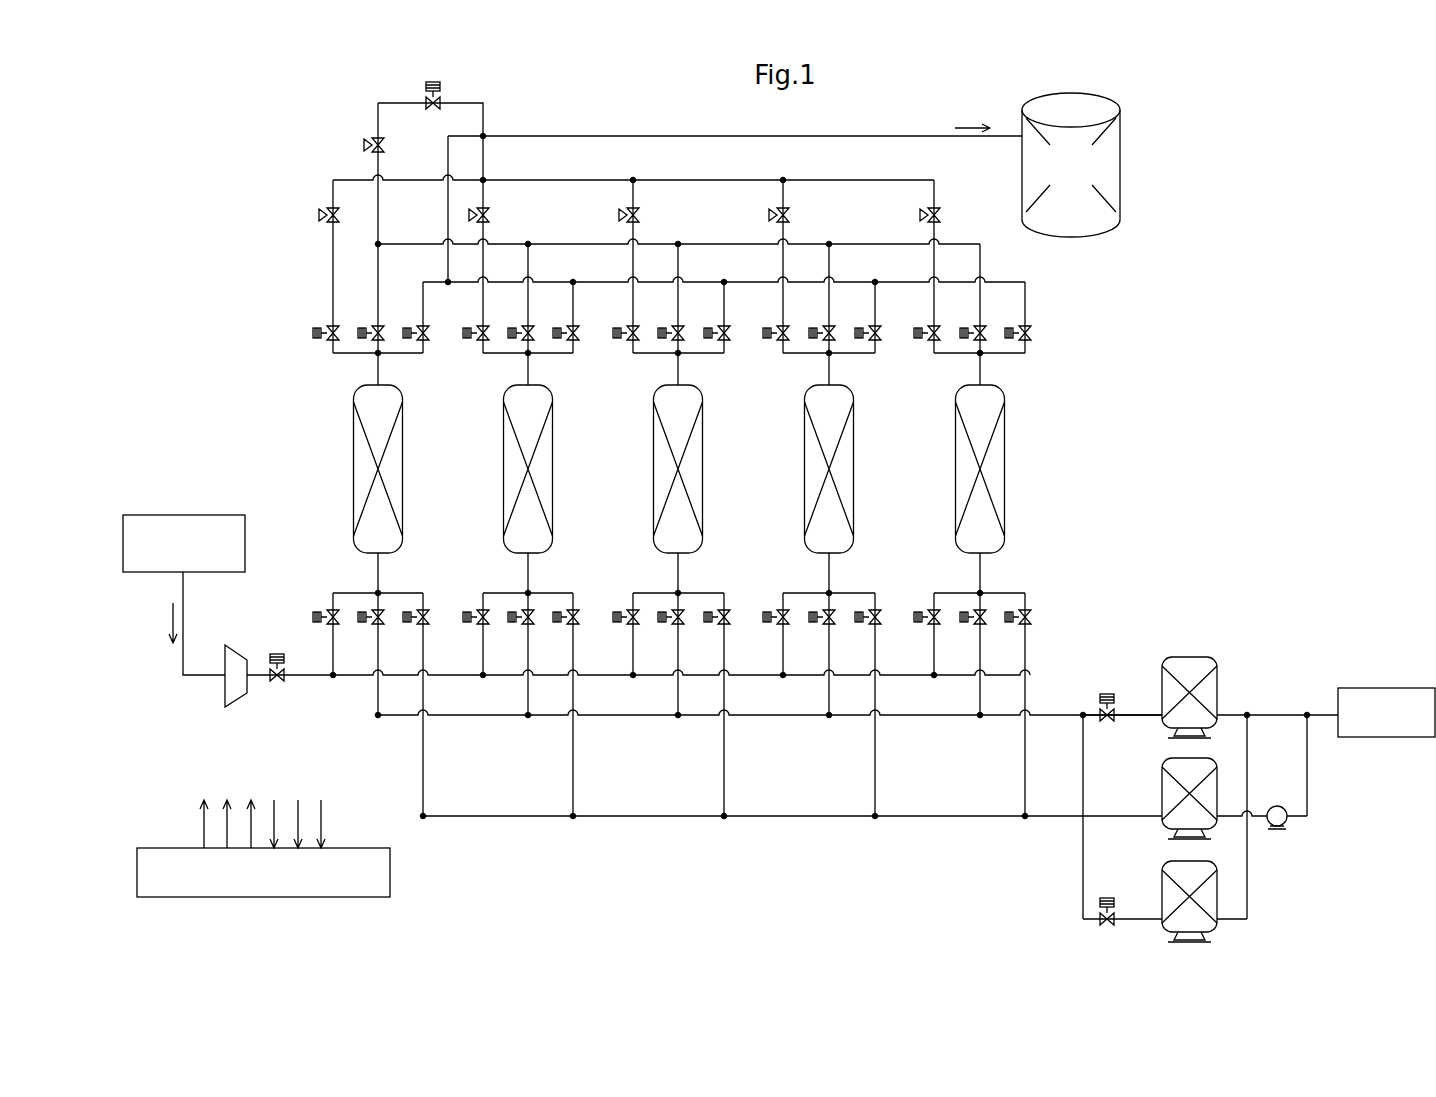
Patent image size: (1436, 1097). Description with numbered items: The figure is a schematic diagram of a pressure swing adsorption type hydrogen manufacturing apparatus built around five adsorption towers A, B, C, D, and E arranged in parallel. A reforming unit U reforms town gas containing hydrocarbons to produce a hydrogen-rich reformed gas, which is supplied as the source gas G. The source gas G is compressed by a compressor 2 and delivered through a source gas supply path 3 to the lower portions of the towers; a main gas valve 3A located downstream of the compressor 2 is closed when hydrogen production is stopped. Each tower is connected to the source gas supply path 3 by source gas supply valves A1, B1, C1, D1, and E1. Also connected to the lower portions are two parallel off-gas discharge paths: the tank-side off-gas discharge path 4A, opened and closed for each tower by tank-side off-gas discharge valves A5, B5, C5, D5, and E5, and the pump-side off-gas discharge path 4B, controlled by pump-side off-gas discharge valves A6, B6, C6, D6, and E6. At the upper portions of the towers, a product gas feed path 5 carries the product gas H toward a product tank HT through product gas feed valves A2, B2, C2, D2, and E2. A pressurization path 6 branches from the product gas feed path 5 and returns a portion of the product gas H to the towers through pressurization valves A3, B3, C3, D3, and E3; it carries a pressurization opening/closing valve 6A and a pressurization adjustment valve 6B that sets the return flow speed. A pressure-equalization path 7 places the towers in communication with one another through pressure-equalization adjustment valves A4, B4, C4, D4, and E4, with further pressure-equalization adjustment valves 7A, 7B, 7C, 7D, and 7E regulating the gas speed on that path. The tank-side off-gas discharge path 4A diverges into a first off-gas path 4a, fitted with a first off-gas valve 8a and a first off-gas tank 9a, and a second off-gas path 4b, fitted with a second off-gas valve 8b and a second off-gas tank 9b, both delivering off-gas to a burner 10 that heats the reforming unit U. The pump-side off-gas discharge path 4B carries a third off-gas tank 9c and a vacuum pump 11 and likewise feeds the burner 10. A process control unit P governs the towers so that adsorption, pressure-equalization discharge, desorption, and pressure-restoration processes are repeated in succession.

The compressor 2 is at (228, 700).
The source gas supply path 3 is at (300, 680).
The main gas valve 3A is at (277, 654).
The tank-side off-gas discharge path 4A is at (483, 718).
The pump-side off-gas discharge path 4B is at (483, 822).
The first off-gas path 4a is at (1138, 712).
The second off-gas path 4b is at (1138, 916).
The product gas feed path 5 is at (742, 134).
The pressurization path 6 is at (376, 118).
The pressurization opening/closing valve 6A is at (442, 88).
The pressurization adjustment valve 6B is at (366, 146).
The pressure-equalization path 7 is at (723, 178).
The pressure-equalization adjustment valve 7A is at (320, 216).
The pressure-equalization adjustment valve 7B is at (490, 216).
The pressure-equalization adjustment valve 7C is at (640, 216).
The pressure-equalization adjustment valve 7D is at (790, 216).
The pressure-equalization adjustment valve 7E is at (941, 216).
The first off-gas valve 8a is at (1106, 694).
The second off-gas valve 8b is at (1106, 898).
The first off-gas tank 9a is at (1200, 670).
The second off-gas tank 9b is at (1200, 873).
The third off-gas tank 9c is at (1200, 770).
The burner 10 is at (1394, 690).
The vacuum pump 11 is at (1280, 806).
The tower A is at (353, 468).
The tower B is at (503, 468).
The tower C is at (653, 468).
The tower D is at (804, 468).
The tower E is at (955, 468).
The source gas supply valve A1 is at (338, 624).
The product gas feed valve A2 is at (428, 331).
The pressurization valve A3 is at (383, 331).
The pressure-equalization adjustment valve A4 is at (338, 331).
The tank-side off-gas discharge valve A5 is at (383, 624).
The pump-side off-gas discharge valve A6 is at (428, 624).
The source gas supply valve B1 is at (488, 624).
The product gas feed valve B2 is at (578, 331).
The pressurization valve B3 is at (533, 331).
The pressure-equalization adjustment valve B4 is at (488, 331).
The tank-side off-gas discharge valve B5 is at (533, 624).
The pump-side off-gas discharge valve B6 is at (578, 624).
The source gas supply valve C1 is at (638, 624).
The product gas feed valve C2 is at (729, 331).
The pressurization valve C3 is at (683, 331).
The pressure-equalization adjustment valve C4 is at (638, 331).
The tank-side off-gas discharge valve C5 is at (683, 624).
The pump-side off-gas discharge valve C6 is at (729, 624).
The source gas supply valve D1 is at (788, 624).
The product gas feed valve D2 is at (880, 331).
The pressurization valve D3 is at (834, 331).
The pressure-equalization adjustment valve D4 is at (788, 331).
The tank-side off-gas discharge valve D5 is at (834, 624).
The pump-side off-gas discharge valve D6 is at (880, 624).
The source gas supply valve E1 is at (939, 624).
The product gas feed valve E2 is at (1030, 331).
The pressurization valve E3 is at (985, 331).
The pressure-equalization adjustment valve E4 is at (939, 331).
The tank-side off-gas discharge valve E5 is at (985, 624).
The pump-side off-gas discharge valve E6 is at (1030, 624).
The reforming unit U is at (183, 514).
The source gas G is at (172, 622).
The product gas H is at (970, 126).
The product tank HT is at (1120, 135).
The process control unit P is at (192, 896).